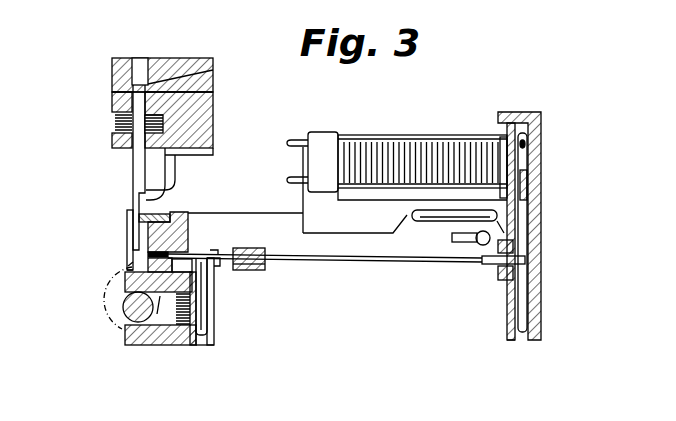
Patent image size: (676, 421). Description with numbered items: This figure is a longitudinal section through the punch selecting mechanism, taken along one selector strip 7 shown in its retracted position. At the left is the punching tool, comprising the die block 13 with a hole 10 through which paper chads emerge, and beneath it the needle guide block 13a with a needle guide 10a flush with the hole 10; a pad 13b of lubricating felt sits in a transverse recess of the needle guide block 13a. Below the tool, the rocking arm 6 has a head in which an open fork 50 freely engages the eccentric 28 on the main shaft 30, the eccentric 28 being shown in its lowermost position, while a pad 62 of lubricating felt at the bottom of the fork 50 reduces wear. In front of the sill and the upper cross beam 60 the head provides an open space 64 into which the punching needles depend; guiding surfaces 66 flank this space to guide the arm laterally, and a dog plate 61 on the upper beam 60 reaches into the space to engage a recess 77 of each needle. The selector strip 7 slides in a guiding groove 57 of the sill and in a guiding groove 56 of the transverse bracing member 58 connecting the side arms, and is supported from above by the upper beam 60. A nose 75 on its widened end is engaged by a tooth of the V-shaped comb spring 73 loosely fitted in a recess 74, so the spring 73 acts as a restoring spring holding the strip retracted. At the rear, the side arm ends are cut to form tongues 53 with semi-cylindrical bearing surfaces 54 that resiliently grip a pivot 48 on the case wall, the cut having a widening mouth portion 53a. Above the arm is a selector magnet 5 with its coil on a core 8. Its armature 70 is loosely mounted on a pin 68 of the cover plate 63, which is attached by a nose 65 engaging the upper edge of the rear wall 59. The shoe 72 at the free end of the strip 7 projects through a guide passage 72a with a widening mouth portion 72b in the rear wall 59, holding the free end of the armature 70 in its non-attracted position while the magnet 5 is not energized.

The selector magnet 5 is at (430, 157).
The rocking arm 6 is at (279, 198).
The selector strip 7 is at (343, 263).
The core 8 is at (378, 235).
The hole 10 is at (140, 63).
The needle guide 10a is at (143, 97).
The die block 13 is at (213, 66).
The needle guide block 13a is at (197, 115).
The pad of lubricating felt 13b is at (112, 125).
The eccentric 28 is at (125, 311).
The main shaft 30 is at (107, 292).
The pivot 48 is at (455, 227).
The fork 50 is at (137, 342).
The tongue 53 is at (418, 218).
The widening mouth portion 53a is at (538, 202).
The semi-cylindrical bearing surface 54 is at (476, 246).
The guiding groove 56 is at (262, 248).
The guiding groove 57 is at (172, 251).
The transverse bracing member 58 is at (265, 268).
The rear wall 59 is at (510, 333).
The upper cross beam 60 is at (187, 212).
The dog plate 61 is at (163, 214).
The pad of semi-permanent lubricating felt 62 is at (185, 322).
The cover plate 63 is at (542, 328).
The open space 64 is at (127, 264).
The nose 65 is at (498, 121).
The guiding surface 66 is at (127, 233).
The pin 68 is at (540, 149).
The armature 70 is at (527, 232).
The shoe 72 is at (489, 265).
The guide passage 72a is at (528, 268).
The widening mouth portion 72b is at (547, 215).
The spring 73 is at (210, 329).
The recess 74 is at (212, 302).
The nose 75 is at (219, 267).
The recess 77 is at (143, 207).